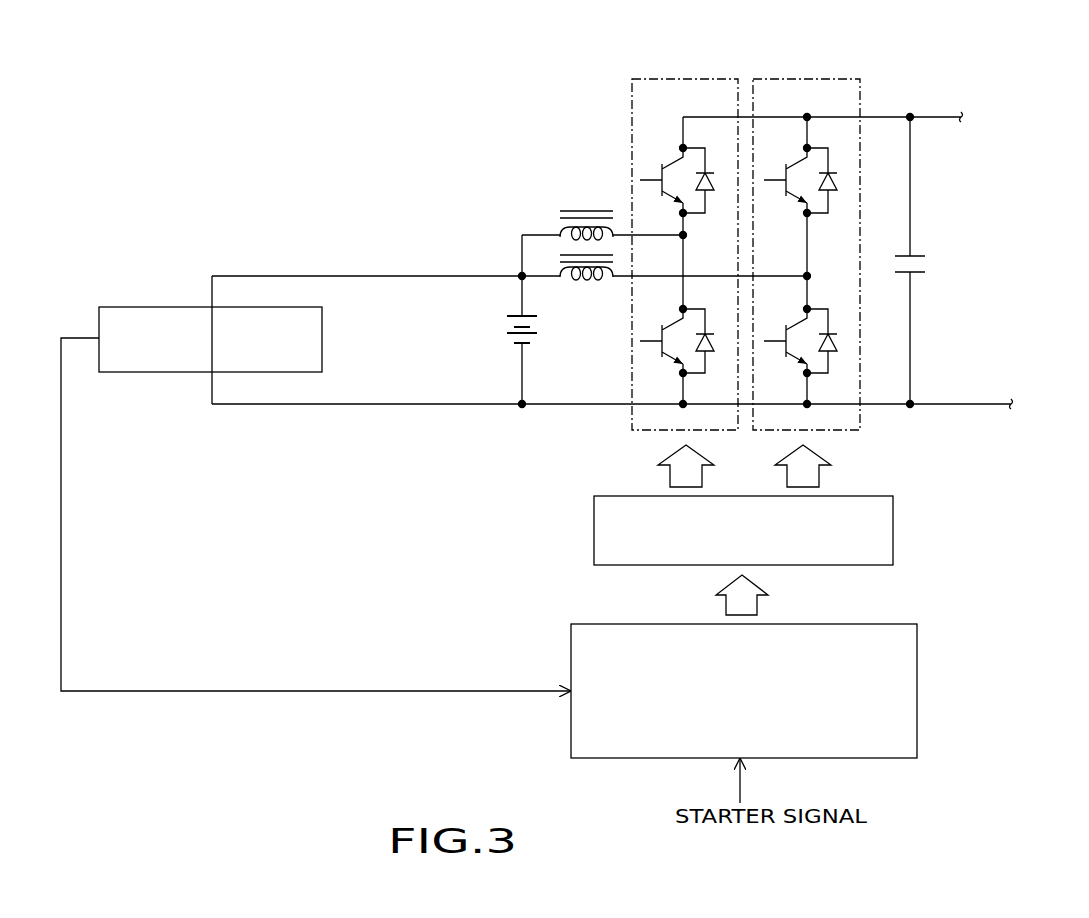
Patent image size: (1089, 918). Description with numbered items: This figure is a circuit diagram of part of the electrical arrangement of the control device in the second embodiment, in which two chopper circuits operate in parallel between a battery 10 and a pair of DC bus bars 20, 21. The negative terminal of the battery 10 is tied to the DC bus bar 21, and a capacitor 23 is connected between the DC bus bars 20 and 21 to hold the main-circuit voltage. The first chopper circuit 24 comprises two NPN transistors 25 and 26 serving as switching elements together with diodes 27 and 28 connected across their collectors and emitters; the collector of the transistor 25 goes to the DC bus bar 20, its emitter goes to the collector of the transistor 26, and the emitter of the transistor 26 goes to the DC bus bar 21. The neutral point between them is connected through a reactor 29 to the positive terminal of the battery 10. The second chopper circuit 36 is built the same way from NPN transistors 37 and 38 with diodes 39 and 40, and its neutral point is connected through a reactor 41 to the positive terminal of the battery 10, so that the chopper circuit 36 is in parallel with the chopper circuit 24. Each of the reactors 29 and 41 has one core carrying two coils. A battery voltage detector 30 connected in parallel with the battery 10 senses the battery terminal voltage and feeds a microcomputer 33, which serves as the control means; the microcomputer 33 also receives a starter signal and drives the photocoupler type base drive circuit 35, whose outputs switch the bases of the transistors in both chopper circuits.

The battery 10 is at (491, 328).
The DC bus bar 20 is at (886, 112).
The DC bus bar 21 is at (978, 409).
The capacitor 23 is at (935, 262).
The chopper circuit 24 is at (676, 79).
The NPN transistor 25 is at (650, 170).
The NPN transistor 26 is at (654, 346).
The diode 27 is at (712, 169).
The diode 28 is at (708, 327).
The reactor 29 is at (588, 210).
The battery voltage detector 30 is at (99, 349).
The microcomputer 33 is at (633, 761).
The base drive circuit 35 is at (594, 528).
The chopper circuit 36 is at (806, 79).
The NPN transistor 37 is at (771, 170).
The NPN transistor 38 is at (775, 346).
The diode 39 is at (832, 169).
The diode 40 is at (828, 327).
The reactor 41 is at (585, 297).